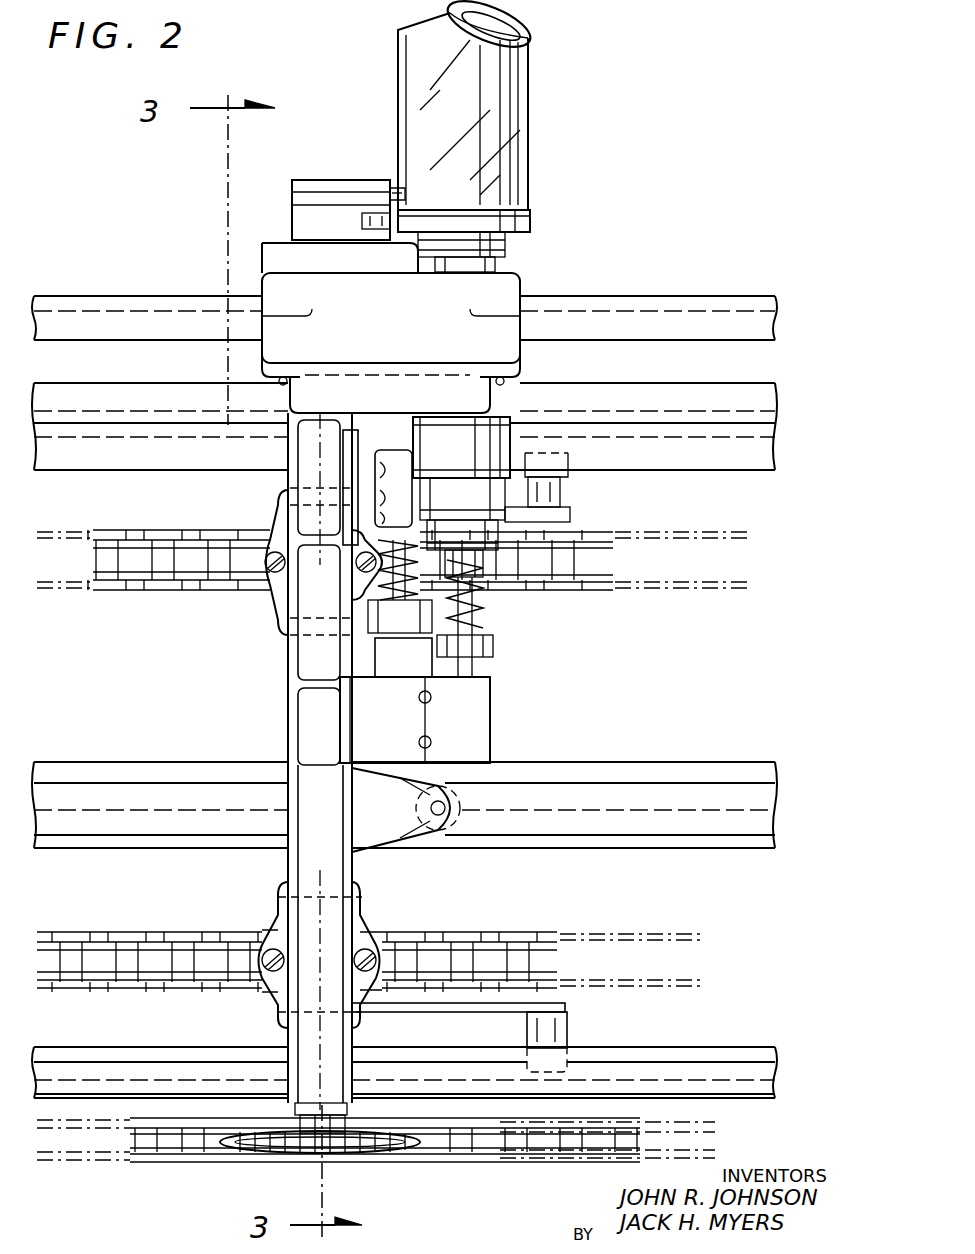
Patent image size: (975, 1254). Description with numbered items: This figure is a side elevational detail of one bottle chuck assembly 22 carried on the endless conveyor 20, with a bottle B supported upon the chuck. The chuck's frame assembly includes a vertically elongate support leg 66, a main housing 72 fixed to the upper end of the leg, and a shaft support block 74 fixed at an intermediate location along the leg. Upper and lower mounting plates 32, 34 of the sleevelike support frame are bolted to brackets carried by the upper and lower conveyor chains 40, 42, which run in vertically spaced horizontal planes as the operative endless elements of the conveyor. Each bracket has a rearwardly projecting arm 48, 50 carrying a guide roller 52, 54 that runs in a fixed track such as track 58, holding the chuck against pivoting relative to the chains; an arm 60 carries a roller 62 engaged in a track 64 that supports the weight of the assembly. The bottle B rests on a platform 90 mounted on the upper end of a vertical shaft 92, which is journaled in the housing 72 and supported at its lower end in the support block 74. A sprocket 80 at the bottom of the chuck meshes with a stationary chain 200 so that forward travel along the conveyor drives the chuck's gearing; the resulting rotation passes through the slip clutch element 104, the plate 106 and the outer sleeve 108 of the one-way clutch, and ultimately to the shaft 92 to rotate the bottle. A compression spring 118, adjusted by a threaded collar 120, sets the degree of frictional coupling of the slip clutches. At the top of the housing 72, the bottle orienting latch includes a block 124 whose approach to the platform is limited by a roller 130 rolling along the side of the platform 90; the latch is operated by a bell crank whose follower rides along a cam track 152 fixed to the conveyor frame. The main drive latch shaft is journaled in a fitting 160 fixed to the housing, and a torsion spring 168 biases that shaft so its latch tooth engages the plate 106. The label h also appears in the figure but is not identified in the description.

The bottle body B is at (530, 103).
The endless conveyor 20 is at (674, 730).
The bottle chuck assembly 22 is at (215, 250).
The upper mounting plate 32 is at (276, 590).
The lower mounting plate 34 is at (265, 908).
The upper conveyor chain 40 is at (590, 585).
The lower conveyor chain 42 is at (555, 882).
The rearwardly projecting arm 48 is at (545, 512).
The rearwardly projecting arm 50 is at (560, 1010).
The guide roller 52 is at (586, 470).
The guide roller 54 is at (570, 1066).
The track 58 is at (725, 1068).
The arm 60 is at (395, 830).
The roller 62 is at (462, 812).
The track 64 is at (635, 850).
The support leg portion 66 is at (296, 716).
The main housing 72 is at (505, 300).
The shaft support block 74 is at (475, 735).
The sprocket 80 is at (250, 1145).
The platform 90 is at (520, 225).
The vertical shaft 92 is at (420, 580).
The band of frictional material 104 is at (492, 455).
The plate 106 is at (510, 432).
The outer sleeve of one way clutch 108 is at (565, 466).
The compression spring 118 is at (487, 620).
The collar 120 is at (490, 648).
The block 124 is at (312, 187).
The roller 130 is at (378, 236).
The cam track 152 is at (735, 262).
The fitting 160 is at (390, 478).
The torsion spring 168 is at (355, 585).
The stationary chain 200 is at (408, 1148).
The height dimension h is at (405, 190).